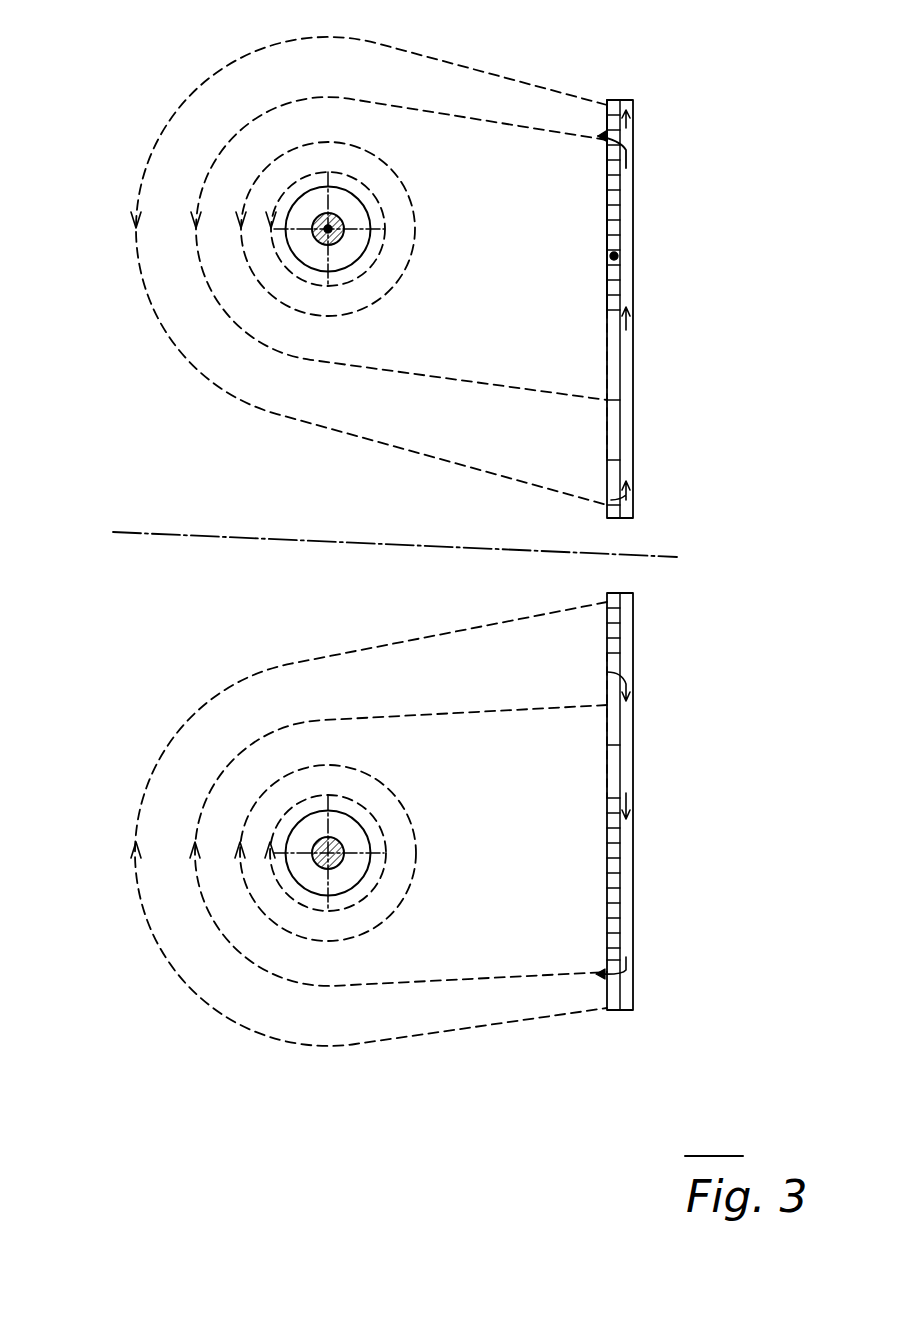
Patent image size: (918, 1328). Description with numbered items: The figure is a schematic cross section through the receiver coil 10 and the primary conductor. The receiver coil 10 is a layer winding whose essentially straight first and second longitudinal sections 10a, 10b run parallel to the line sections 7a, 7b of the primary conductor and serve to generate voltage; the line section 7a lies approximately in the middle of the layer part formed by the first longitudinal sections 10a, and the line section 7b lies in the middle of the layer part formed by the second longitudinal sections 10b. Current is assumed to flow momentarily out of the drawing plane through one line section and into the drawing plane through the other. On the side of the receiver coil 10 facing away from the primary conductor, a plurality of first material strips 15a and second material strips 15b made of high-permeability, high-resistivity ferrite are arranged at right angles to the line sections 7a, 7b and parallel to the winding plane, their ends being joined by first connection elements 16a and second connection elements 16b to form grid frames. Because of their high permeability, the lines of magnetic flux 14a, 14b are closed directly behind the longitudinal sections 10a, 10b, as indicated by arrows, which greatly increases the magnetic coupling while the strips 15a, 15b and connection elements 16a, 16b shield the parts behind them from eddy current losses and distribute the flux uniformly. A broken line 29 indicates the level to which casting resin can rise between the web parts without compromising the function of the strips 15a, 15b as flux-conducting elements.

The line section 7a is at (323, 245).
The line section 7b is at (323, 864).
The lines of magnetic flux 14a is at (222, 312).
The lines of magnetic flux 14b is at (215, 908).
The first material strips 15a is at (625, 431).
The second material strips 15b is at (625, 758).
The first connection elements 16a is at (612, 130).
The second connection elements 16b is at (606, 622).
The first longitudinal sections 10a is at (607, 298).
The second longitudinal sections 10b is at (607, 885).
The receiver coil 10 is at (618, 258).
The broken line 29 is at (607, 745).